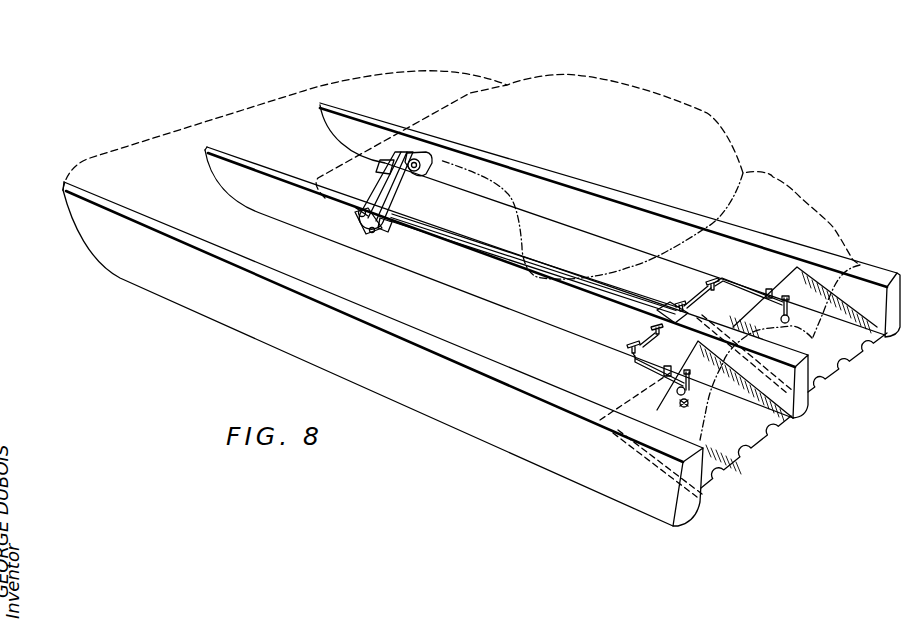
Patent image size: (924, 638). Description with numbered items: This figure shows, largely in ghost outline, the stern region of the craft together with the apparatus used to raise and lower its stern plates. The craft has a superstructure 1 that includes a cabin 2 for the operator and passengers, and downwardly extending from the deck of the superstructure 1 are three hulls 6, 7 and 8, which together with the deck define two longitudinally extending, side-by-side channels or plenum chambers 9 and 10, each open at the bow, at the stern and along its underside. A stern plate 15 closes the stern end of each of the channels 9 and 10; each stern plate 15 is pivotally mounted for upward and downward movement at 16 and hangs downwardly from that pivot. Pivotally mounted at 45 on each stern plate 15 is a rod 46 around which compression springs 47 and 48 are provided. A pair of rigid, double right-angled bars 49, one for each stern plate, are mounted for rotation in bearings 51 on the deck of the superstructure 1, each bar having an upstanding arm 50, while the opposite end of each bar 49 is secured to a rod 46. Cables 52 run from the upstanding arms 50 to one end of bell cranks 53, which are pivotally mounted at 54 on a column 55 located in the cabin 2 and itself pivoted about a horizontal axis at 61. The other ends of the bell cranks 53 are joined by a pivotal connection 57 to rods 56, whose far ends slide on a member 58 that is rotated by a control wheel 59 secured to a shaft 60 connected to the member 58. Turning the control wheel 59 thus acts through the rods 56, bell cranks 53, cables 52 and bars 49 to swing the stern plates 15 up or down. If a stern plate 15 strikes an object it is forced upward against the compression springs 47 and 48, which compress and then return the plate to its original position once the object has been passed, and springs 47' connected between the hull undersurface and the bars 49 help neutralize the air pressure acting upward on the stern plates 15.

The superstructure 1 is at (487, 74).
The cabin 2 is at (651, 85).
The hull 6 is at (333, 123).
The hull 7 is at (213, 166).
The hull 8 is at (103, 243).
The channel or plenum chamber 9 is at (608, 270).
The channel or plenum chamber 10 is at (514, 346).
The stern plate 15 is at (848, 348).
The pivotal mounting of stern plate 16 is at (600, 420).
The pivotal mounting of rod 45 is at (688, 405).
The rod 46 is at (679, 393).
The compression spring 47 is at (763, 335).
The spring 47' is at (720, 315).
The compression spring 48 is at (789, 315).
The rigid double right-angled bar 49 is at (750, 290).
The upstanding arm 50 is at (690, 308).
The bearing 51 is at (710, 278).
The cable 52 is at (479, 240).
The bell crank 53 is at (365, 221).
The pivotal mounting of bell crank 54 is at (381, 224).
The column 55 is at (412, 150).
The rod 56 is at (380, 178).
The pivotal connection 57 is at (357, 213).
The member 58 is at (378, 163).
The control wheel 59 is at (433, 160).
The shaft 60 is at (416, 172).
The pivotal mounting of column 61 is at (372, 231).